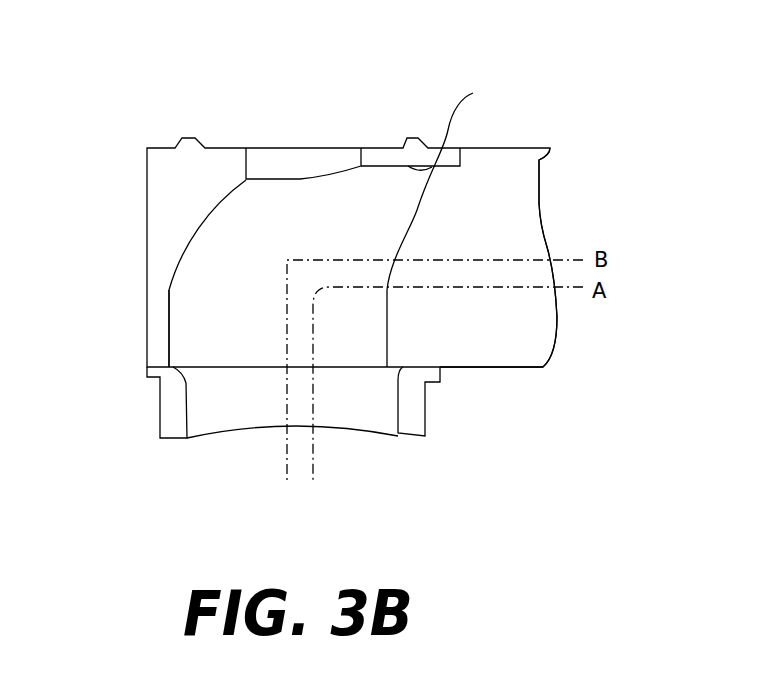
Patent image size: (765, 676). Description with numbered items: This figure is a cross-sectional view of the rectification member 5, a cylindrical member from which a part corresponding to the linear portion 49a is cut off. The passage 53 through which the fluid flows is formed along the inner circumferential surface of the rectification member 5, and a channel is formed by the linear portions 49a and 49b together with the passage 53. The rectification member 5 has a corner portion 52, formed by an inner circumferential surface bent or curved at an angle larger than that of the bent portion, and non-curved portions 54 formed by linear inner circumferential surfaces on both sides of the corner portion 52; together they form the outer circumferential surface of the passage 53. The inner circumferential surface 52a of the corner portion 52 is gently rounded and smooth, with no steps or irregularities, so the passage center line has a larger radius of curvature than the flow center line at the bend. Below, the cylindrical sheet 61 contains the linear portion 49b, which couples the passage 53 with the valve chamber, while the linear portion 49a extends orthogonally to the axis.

The rectification member 5 is at (145, 197).
The inner circumferential surface of the corner portion 52a is at (208, 200).
The corner portion 52 is at (209, 237).
The non-curved portion 54 is at (170, 317).
The passage 53 is at (414, 220).
The linear portion 49a is at (513, 368).
The linear portion 49b is at (398, 410).
The cylindrical sheet 61 is at (427, 412).